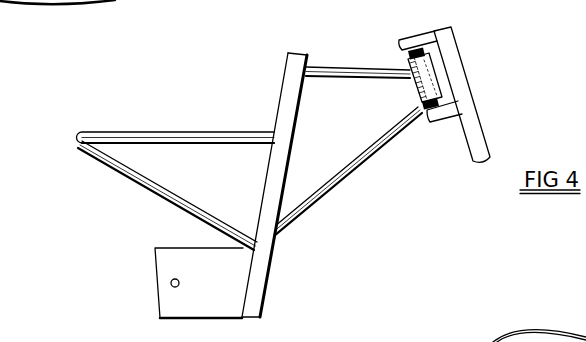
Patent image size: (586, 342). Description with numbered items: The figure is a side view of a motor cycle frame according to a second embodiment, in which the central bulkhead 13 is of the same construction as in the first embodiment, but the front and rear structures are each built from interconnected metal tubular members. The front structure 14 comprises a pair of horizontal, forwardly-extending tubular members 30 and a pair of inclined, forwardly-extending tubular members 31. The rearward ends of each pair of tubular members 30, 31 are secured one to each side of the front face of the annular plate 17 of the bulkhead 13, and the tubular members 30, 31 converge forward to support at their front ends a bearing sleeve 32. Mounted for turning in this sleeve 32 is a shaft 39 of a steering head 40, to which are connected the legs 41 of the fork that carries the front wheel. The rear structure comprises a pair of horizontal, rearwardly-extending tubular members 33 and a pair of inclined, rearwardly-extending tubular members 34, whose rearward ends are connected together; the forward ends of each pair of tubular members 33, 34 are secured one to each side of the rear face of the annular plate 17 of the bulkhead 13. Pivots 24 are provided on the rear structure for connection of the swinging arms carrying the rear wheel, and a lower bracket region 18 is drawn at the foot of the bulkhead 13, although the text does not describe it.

The bulkhead 13 is at (262, 262).
The front structure 14 is at (365, 162).
The annular plate 17 is at (291, 67).
The base bracket 18 is at (227, 302).
The pivots 24 is at (172, 281).
The horizontal forwardly-extending tubular members 30 is at (380, 79).
The inclined forwardly-extending tubular members 31 is at (396, 132).
The bearing sleeve 32 is at (436, 83).
The horizontal rearwardly-extending tubular members 33 is at (197, 131).
The inclined rearwardly-extending tubular members 34 is at (137, 181).
The shaft 39 is at (434, 43).
The steering head 40 is at (398, 35).
The legs 41 is at (477, 135).